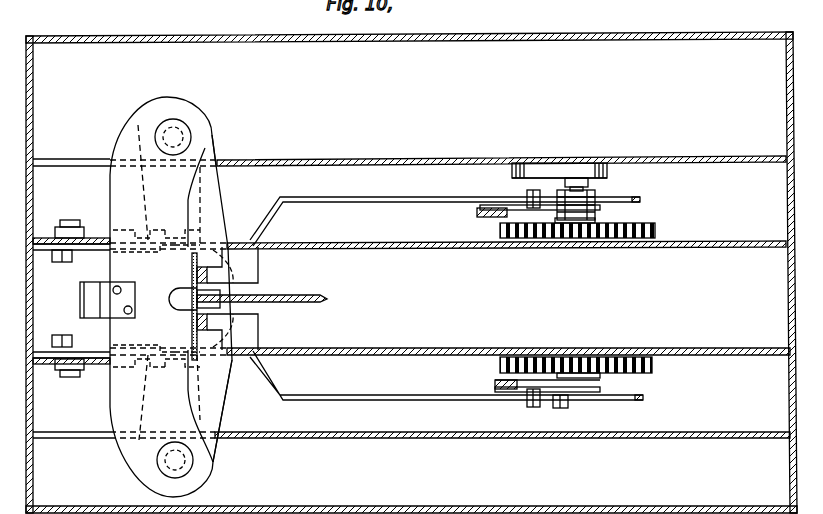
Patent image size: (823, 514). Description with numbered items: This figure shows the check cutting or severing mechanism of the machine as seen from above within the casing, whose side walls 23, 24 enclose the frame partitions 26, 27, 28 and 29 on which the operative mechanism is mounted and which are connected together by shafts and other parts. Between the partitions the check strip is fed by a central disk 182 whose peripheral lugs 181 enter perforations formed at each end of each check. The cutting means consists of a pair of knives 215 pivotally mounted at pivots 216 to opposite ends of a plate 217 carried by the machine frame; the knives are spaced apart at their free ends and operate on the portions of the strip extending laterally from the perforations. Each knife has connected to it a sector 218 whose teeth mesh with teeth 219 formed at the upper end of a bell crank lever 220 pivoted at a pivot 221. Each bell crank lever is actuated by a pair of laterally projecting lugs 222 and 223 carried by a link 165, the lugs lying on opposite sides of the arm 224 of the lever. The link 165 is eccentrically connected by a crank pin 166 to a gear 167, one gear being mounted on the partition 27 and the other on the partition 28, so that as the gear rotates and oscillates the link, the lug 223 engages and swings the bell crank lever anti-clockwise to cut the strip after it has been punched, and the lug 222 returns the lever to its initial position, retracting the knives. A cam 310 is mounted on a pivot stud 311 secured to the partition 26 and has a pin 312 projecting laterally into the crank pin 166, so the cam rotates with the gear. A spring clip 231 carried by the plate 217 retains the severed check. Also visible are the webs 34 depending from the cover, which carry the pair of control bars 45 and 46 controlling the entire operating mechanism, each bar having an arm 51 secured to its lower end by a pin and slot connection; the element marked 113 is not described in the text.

The side wall 23 is at (700, 32).
The side wall 24 is at (386, 508).
The partition 26 is at (409, 146).
The partition 27 is at (736, 242).
The partition 28 is at (722, 348).
The partition 29 is at (712, 432).
The web 34 is at (42, 232).
The control bar 45 is at (92, 380).
The control bar 46 is at (95, 232).
The arm 51 is at (57, 226).
The vertical plate 113 is at (190, 312).
The link 165 is at (488, 206).
The crank pin 166 is at (600, 208).
The gear 167 is at (657, 229).
The peripheral lug 181 is at (170, 290).
The central disk 182 is at (276, 294).
The knife 215 is at (214, 166).
The pivot 216 is at (181, 128).
The plate 217 is at (116, 165).
The sector 218 is at (200, 198).
The teeth 219 is at (172, 228).
The bell crank lever 220 is at (184, 229).
The pivot 221 is at (131, 232).
The lug 222 is at (533, 190).
The lug 223 is at (549, 190).
The arm 224 is at (395, 196).
The spring clip 231 is at (80, 303).
The cam 310 is at (612, 177).
The pivot stud 311 is at (588, 164).
The pin 312 is at (592, 183).